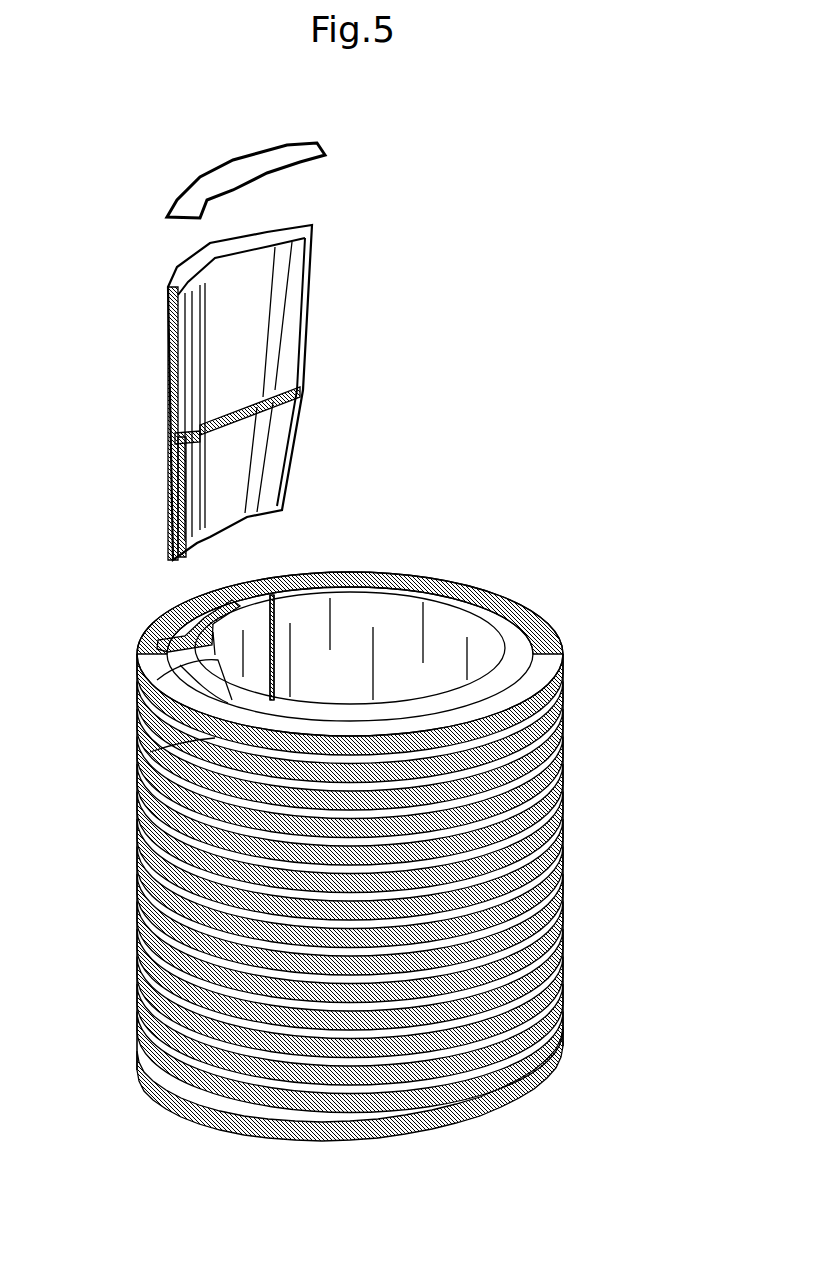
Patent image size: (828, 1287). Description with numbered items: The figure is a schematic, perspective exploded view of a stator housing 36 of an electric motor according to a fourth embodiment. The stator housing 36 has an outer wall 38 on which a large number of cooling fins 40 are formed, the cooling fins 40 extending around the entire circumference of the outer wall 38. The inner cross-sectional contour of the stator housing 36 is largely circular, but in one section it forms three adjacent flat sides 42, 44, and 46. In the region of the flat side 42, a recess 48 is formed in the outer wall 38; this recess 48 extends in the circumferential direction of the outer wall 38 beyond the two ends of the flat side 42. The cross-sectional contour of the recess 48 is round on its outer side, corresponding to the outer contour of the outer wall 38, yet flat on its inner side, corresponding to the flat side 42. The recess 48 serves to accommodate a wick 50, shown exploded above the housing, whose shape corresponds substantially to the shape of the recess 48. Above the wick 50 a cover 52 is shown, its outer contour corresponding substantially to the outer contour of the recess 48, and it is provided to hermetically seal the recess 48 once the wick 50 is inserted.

The stator housing 36 is at (374, 897).
The outer wall 38 is at (458, 597).
The cooling fins 40 is at (563, 872).
The flat side 42 is at (240, 620).
The flat side 44 is at (146, 698).
The flat side 46 is at (152, 750).
The recess 48 is at (160, 620).
The wick 50 is at (293, 322).
The cover 52 is at (212, 182).